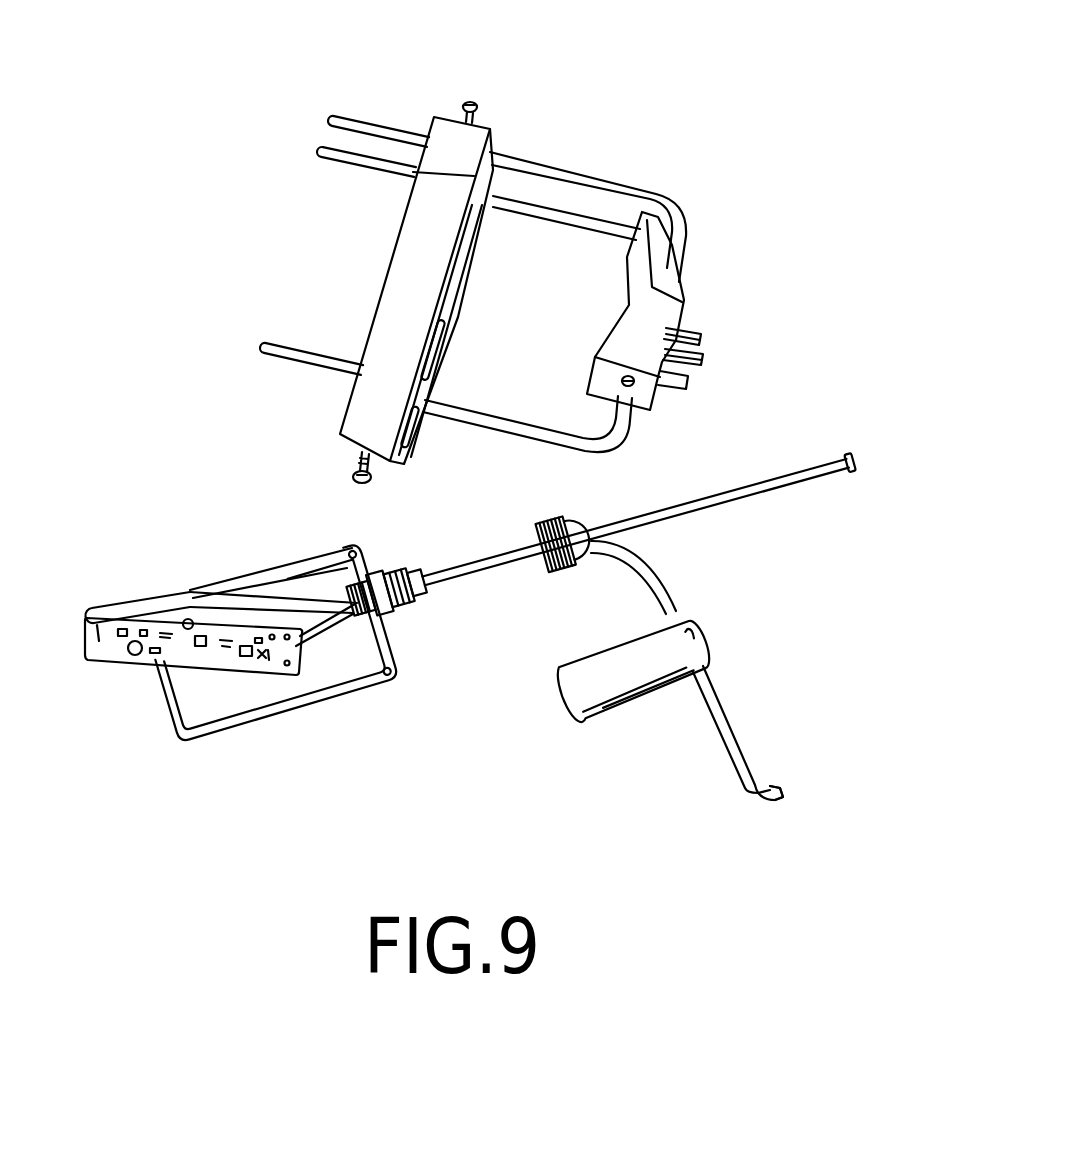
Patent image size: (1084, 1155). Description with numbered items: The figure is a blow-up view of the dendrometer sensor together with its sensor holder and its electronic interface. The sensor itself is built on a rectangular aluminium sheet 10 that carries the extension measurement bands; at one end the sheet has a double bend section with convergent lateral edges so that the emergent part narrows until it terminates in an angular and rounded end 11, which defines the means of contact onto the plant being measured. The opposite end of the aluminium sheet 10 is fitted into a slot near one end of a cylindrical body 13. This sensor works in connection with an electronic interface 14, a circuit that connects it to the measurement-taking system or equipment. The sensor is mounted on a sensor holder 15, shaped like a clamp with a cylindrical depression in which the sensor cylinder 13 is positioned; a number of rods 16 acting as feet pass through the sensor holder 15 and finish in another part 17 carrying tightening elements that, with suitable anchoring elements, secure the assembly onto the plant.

The aluminium sheet 10 is at (727, 718).
The angular and rounded end 11 is at (785, 794).
The cylindrical body 13 is at (605, 694).
The electronic interface 14 is at (265, 653).
The sensor holder 15 is at (405, 273).
The rods 16 is at (525, 420).
The part with tightening elements 17 is at (660, 313).